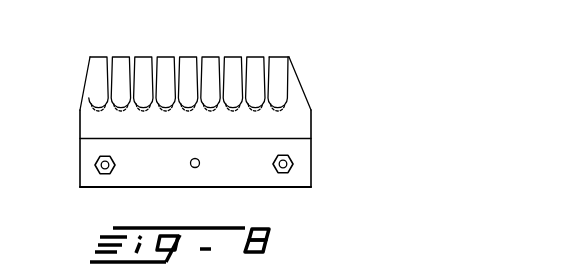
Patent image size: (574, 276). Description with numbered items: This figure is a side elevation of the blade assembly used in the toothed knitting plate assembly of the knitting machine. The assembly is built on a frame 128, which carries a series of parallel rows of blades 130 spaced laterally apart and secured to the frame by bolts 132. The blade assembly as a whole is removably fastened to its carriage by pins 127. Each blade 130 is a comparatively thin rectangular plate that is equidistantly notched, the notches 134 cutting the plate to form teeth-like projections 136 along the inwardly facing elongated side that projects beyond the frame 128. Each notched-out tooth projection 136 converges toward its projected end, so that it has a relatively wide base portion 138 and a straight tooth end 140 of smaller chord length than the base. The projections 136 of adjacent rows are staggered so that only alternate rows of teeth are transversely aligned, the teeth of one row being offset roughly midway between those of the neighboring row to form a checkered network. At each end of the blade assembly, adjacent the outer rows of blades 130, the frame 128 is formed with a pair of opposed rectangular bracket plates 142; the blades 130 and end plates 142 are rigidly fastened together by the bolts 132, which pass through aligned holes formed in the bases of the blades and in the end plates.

The pin 127 is at (199, 161).
The frame 128 is at (318, 156).
The blade 130 is at (304, 64).
The bolt 132 is at (284, 174).
The notch 134 is at (123, 104).
The teeth-like projection 136 is at (148, 57).
The base portion 138 is at (278, 99).
The straight tooth end 140 is at (294, 55).
The bracket plate 142 is at (80, 156).